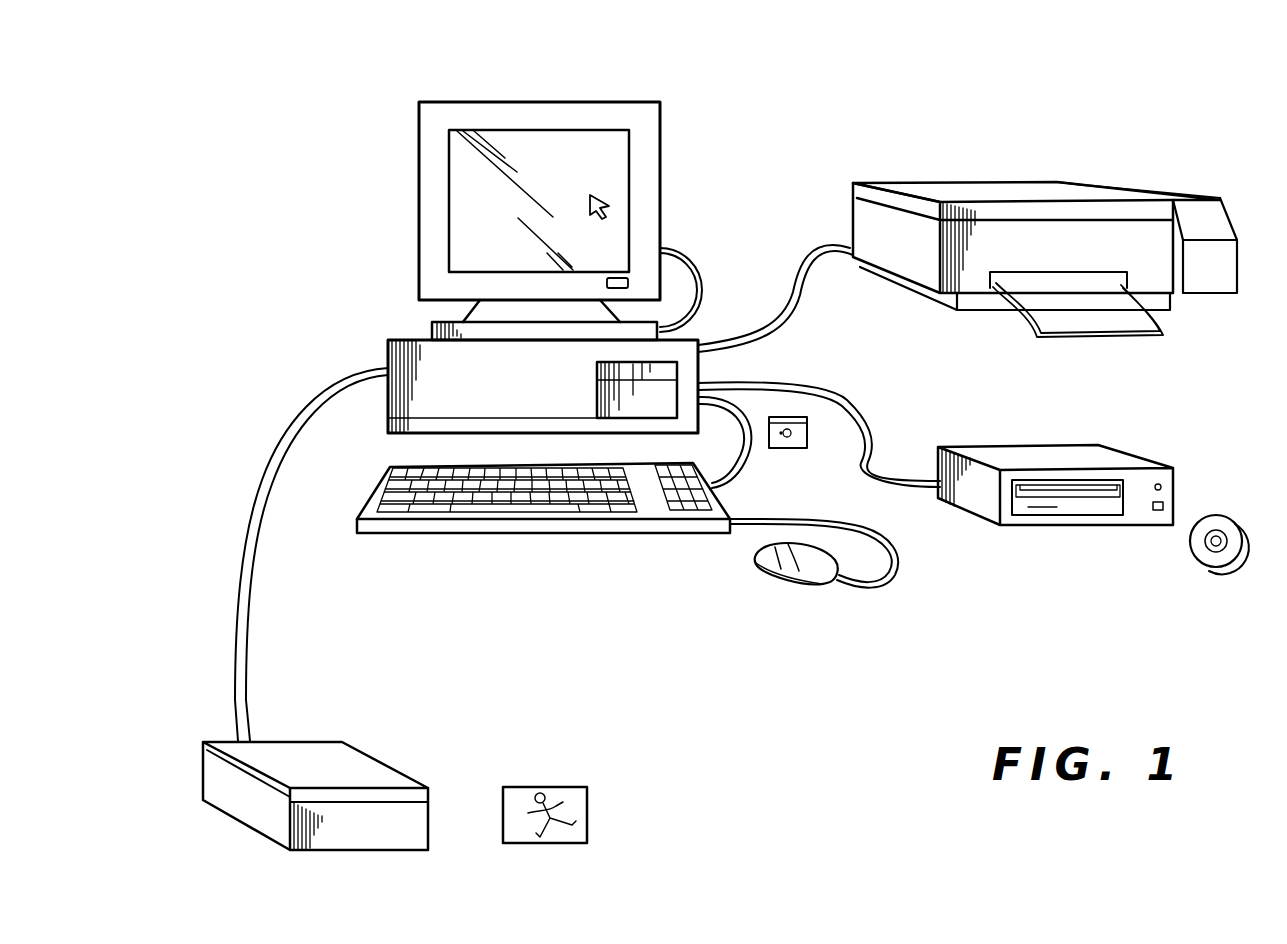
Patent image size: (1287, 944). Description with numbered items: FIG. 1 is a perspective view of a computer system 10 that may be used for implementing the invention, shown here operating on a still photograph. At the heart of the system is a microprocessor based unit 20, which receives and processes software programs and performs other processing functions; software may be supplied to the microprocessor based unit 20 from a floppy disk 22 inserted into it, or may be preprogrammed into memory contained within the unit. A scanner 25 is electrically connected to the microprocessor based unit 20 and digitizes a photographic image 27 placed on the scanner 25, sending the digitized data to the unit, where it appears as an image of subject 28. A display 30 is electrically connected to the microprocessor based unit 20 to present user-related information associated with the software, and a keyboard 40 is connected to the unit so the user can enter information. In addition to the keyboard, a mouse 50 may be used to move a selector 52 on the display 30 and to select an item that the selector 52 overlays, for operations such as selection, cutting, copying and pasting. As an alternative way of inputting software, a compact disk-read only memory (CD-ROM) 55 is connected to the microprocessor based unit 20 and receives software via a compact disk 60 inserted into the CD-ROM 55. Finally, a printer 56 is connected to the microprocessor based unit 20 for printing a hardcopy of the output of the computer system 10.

The computer system 10 is at (797, 80).
The microprocessor based unit 20 is at (402, 342).
The floppy disk 22 is at (795, 450).
The scanner 25 is at (377, 777).
The photographic image 27 is at (573, 786).
The image of subject 28 is at (527, 813).
The display 30 is at (560, 101).
The keyboard 40 is at (458, 530).
The mouse 50 is at (787, 583).
The selector 52 is at (607, 203).
The compact disk-read only memory (CD-ROM) 55 is at (968, 445).
The printer 56 is at (922, 182).
The compact disk 60 is at (1207, 560).